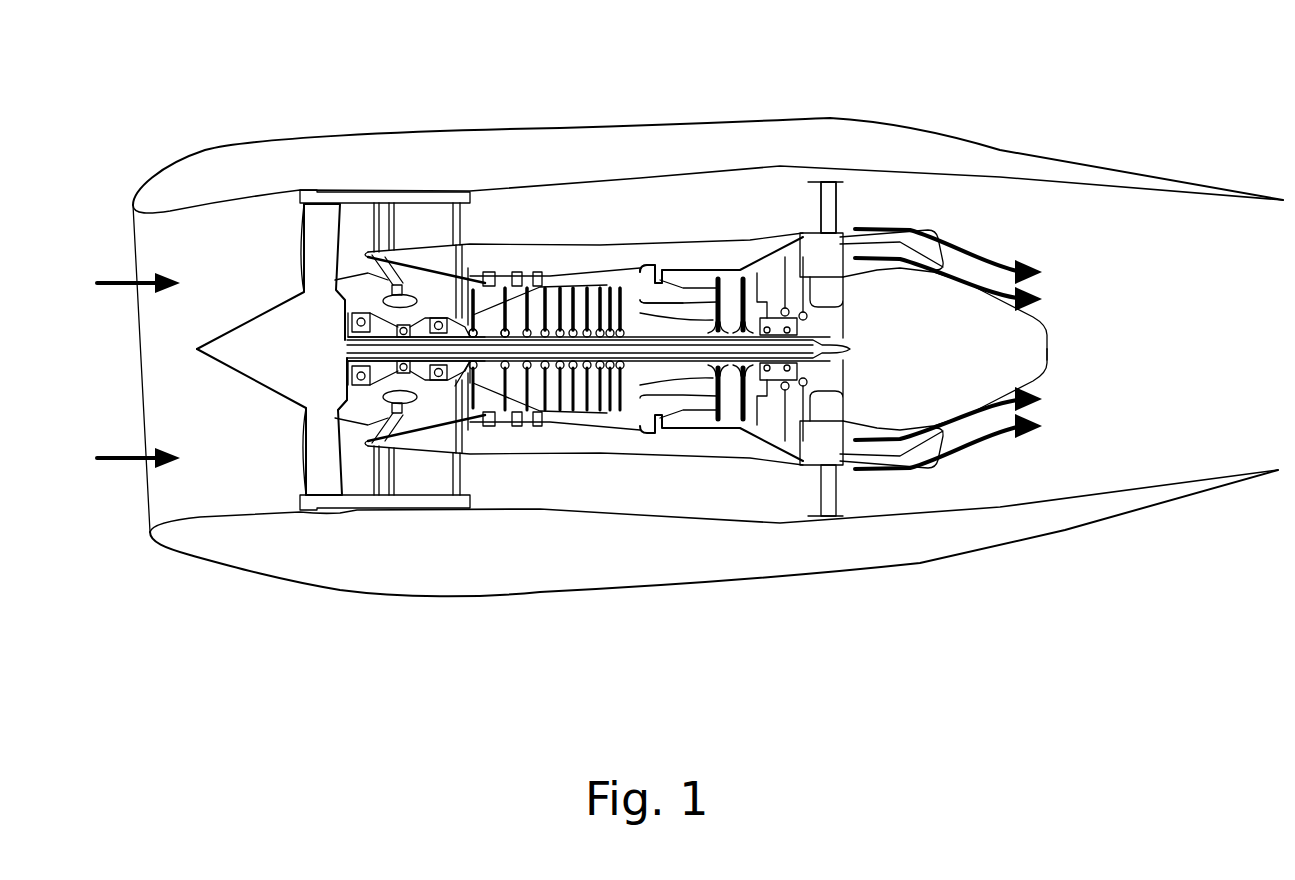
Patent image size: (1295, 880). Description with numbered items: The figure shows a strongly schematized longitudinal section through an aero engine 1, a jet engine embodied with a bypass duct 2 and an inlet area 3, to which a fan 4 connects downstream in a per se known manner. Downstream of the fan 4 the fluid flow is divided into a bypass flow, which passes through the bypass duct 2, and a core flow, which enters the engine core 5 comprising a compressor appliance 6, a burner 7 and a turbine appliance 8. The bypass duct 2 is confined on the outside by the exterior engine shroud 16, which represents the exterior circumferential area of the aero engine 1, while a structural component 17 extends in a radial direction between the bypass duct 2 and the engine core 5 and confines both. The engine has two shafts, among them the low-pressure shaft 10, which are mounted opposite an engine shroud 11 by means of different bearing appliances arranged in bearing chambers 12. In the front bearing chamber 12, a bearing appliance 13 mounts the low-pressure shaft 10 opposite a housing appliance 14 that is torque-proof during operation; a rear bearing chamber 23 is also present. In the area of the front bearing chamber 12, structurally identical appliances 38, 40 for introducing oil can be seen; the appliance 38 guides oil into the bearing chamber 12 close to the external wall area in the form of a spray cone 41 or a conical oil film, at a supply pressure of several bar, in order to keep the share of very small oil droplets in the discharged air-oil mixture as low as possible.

The aero engine 1 is at (170, 110).
The bypass duct 2 is at (617, 213).
The inlet area 3 is at (153, 240).
The fan 4 is at (310, 235).
The engine core 5 is at (520, 252).
The compressor appliance 6 is at (548, 270).
The burner 7 is at (700, 270).
The turbine appliance 8 is at (765, 278).
The low-pressure shaft 10 is at (387, 293).
The engine shroud 11 is at (470, 325).
The bearing chamber 12 is at (480, 428).
The bearing appliance 13 is at (335, 368).
The housing appliance 14 is at (428, 430).
The exterior engine shroud 16 is at (692, 590).
The structural component 17 is at (448, 402).
The rear bearing chamber 23 is at (785, 442).
The appliance for introducing oil 38 is at (338, 450).
The appliance for introducing oil 40 is at (437, 305).
The spray cone 41 is at (383, 405).